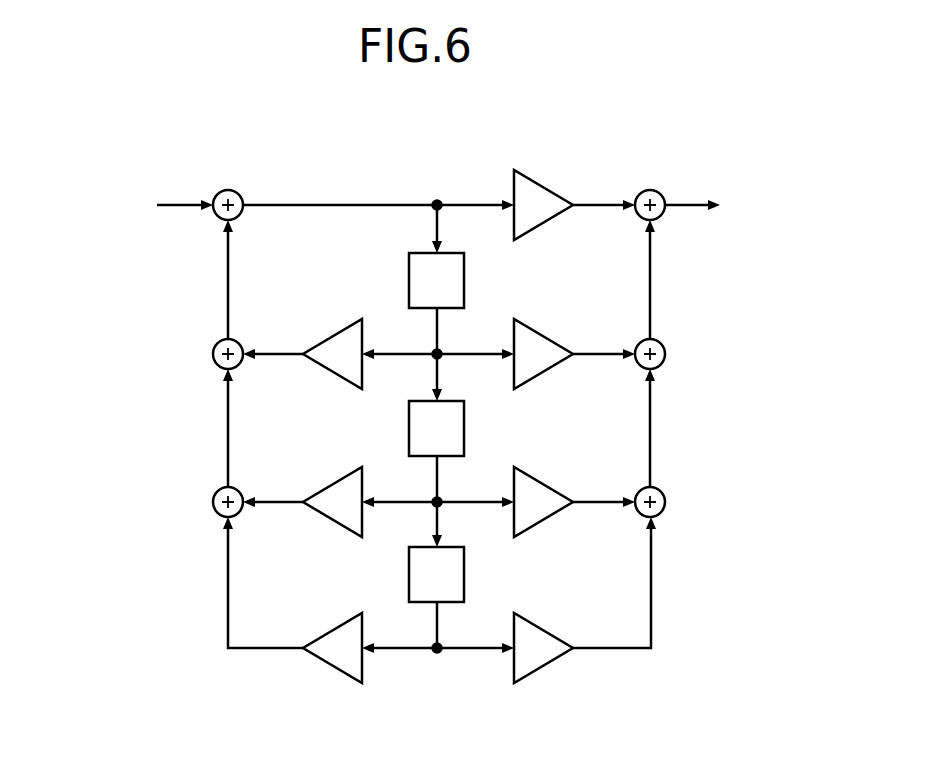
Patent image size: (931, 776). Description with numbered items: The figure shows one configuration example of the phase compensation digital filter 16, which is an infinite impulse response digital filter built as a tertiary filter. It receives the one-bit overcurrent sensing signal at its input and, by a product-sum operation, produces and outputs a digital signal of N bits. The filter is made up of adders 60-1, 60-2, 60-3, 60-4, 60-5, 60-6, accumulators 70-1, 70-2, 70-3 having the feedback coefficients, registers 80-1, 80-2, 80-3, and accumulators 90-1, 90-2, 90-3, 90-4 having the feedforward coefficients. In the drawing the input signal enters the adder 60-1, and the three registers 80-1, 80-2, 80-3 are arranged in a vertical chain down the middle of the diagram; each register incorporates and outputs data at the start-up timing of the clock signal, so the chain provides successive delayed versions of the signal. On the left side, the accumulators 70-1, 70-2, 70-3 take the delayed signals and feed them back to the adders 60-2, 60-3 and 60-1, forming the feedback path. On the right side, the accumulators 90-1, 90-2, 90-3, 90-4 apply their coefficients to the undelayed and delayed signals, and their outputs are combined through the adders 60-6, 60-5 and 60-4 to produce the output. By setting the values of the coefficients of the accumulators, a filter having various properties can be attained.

The phase compensation digital filter 16 is at (466, 145).
The adder 60-1 is at (218, 194).
The adder 60-2 is at (218, 343).
The adder 60-3 is at (218, 491).
The adder 60-4 is at (660, 194).
The adder 60-5 is at (660, 343).
The adder 60-6 is at (660, 491).
The accumulator 70-1 is at (340, 330).
The accumulator 70-2 is at (340, 478).
The accumulator 70-3 is at (340, 625).
The register 80-1 is at (464, 279).
The register 80-2 is at (464, 427).
The register 80-3 is at (464, 573).
The accumulator 90-1 is at (546, 188).
The accumulator 90-2 is at (546, 338).
The accumulator 90-3 is at (546, 486).
The accumulator 90-4 is at (546, 628).